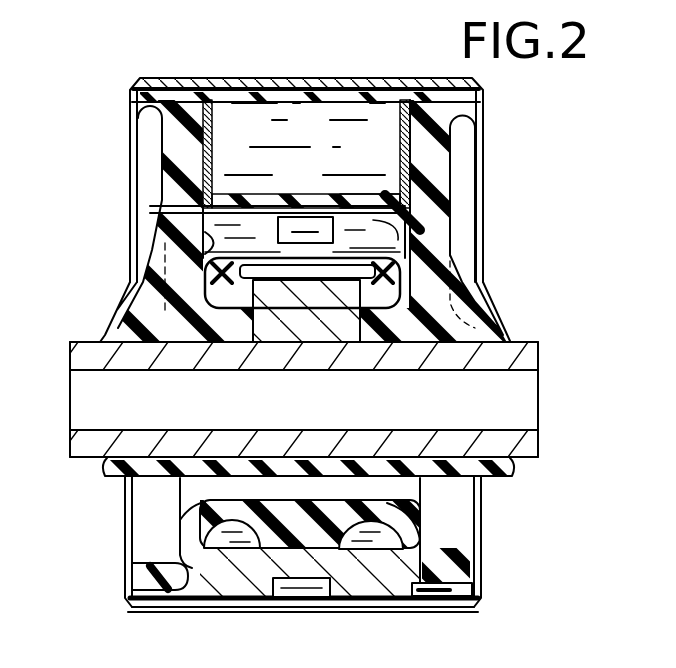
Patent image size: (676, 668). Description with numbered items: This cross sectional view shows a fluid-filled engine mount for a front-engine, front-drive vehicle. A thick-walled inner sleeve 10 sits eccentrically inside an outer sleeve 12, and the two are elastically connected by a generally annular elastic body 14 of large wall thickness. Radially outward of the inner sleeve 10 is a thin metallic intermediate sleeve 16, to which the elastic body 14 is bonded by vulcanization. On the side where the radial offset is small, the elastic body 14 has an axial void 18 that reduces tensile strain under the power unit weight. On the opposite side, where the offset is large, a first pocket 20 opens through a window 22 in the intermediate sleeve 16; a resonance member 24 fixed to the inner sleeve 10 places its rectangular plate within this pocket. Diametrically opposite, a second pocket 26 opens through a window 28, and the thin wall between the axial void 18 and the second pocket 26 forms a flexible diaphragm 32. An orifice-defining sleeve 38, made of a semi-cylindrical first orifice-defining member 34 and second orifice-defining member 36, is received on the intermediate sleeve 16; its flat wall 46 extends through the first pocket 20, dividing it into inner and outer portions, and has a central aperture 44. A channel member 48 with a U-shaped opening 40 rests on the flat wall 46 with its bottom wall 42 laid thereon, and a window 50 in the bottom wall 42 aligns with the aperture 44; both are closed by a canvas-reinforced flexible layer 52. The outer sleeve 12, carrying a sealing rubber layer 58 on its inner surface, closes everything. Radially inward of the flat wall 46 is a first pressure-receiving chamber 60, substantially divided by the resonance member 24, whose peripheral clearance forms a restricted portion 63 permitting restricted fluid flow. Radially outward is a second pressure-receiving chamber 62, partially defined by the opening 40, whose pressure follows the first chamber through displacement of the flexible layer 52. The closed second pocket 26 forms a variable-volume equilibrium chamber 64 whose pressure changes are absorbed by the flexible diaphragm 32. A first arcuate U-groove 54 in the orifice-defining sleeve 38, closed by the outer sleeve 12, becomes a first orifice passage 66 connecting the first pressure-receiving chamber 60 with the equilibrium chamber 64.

The inner sleeve 10 is at (97, 437).
The outer sleeve 12 is at (468, 607).
The elastic body 14 is at (438, 238).
The intermediate sleeve 16 is at (128, 590).
The axial void 18 is at (368, 490).
The first pocket 20 is at (213, 247).
The window 22 is at (400, 98).
The resonance member 24 is at (235, 283).
The second pocket 26 is at (193, 527).
The window 28 is at (187, 566).
The flexible diaphragm 32 is at (110, 460).
The first orifice-defining member 34 is at (450, 204).
The second orifice-defining member 36 is at (400, 582).
The orifice-defining sleeve 38 is at (418, 566).
The U-shaped opening 40 is at (207, 130).
The bottom wall 42 is at (413, 152).
The aperture 44 is at (357, 221).
The flat wall 46 is at (556, 176).
The channel member 48 is at (190, 159).
The window 50 is at (357, 200).
The flexible layer 52 is at (250, 200).
The first arcuate U-groove 54 is at (387, 523).
The sealing rubber layer 58 is at (132, 96).
The first pressure-receiving chamber 60 is at (210, 216).
The second pressure-receiving chamber 62 is at (303, 114).
The restricted portion 63 is at (400, 288).
The equilibrium chamber 64 is at (400, 488).
The first orifice passage 66 is at (301, 597).